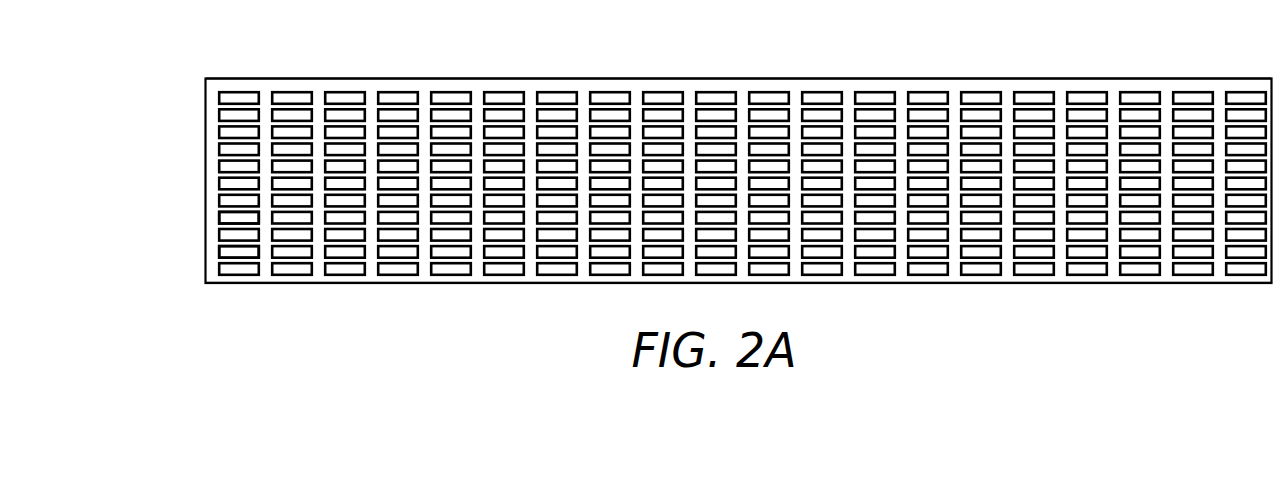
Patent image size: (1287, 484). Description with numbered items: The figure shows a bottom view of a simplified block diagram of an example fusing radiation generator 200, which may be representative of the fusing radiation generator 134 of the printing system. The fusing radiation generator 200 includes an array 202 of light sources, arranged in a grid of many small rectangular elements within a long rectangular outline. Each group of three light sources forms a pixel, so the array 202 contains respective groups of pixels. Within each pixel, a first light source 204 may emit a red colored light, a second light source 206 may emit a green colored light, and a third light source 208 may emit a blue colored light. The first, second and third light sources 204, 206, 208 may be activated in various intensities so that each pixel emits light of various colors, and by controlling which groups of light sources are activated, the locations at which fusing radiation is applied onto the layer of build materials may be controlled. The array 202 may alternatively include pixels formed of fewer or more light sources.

The fusing radiation generator 200 is at (698, 48).
The array 202 is at (191, 100).
The fusing radiation generator 134 is at (390, 78).
The first light source 204 is at (237, 275).
The second light source 206 is at (220, 246).
The third light source 208 is at (220, 223).